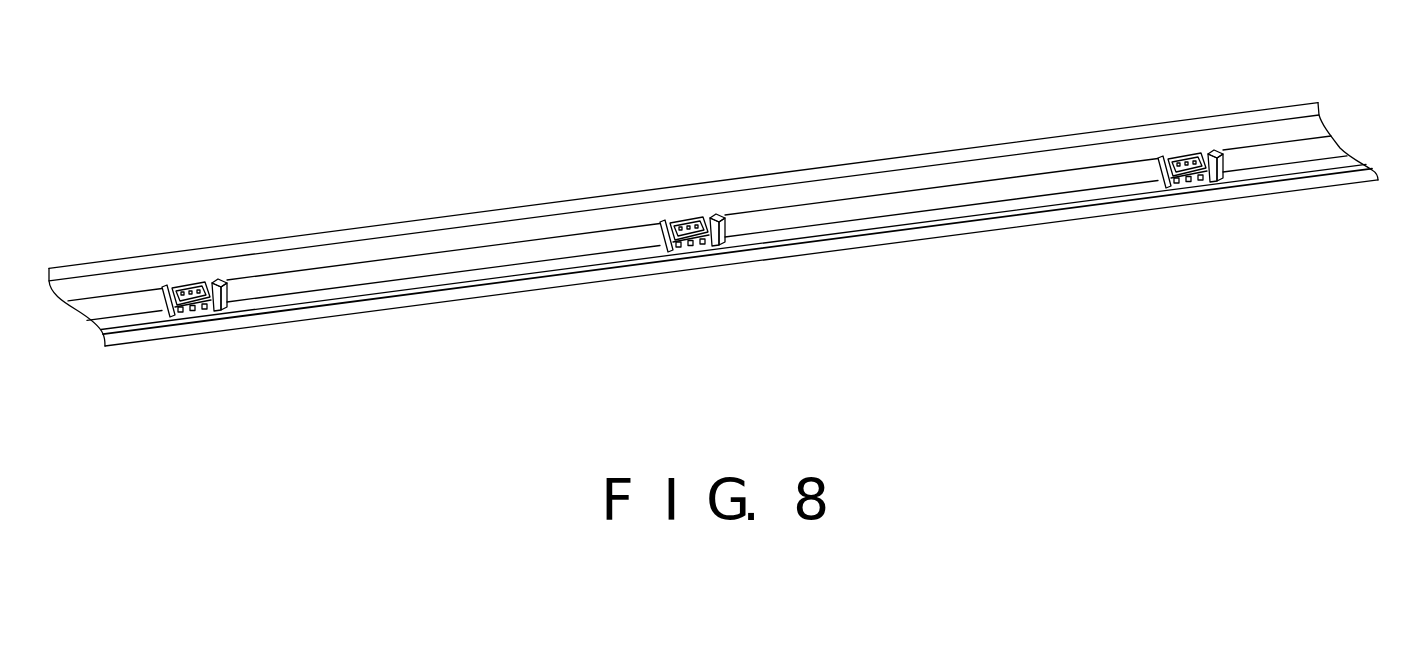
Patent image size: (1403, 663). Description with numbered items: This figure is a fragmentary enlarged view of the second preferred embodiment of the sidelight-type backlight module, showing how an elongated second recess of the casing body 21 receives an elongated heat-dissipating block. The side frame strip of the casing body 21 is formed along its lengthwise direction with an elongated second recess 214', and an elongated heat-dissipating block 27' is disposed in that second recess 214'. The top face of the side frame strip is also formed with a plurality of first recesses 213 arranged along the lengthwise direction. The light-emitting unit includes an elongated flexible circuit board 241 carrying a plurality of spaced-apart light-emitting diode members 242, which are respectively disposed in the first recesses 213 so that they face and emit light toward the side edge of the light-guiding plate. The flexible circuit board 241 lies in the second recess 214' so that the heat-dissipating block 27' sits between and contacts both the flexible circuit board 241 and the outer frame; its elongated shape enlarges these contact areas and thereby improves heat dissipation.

The casing body 21 is at (713, 213).
The first recesses 213 is at (213, 283).
The elongated second recess 214' is at (737, 274).
The flexible circuit board 241 is at (1122, 201).
The light-emitting diode members 242 is at (188, 287).
The elongated heat-dissipating block 27' is at (741, 263).